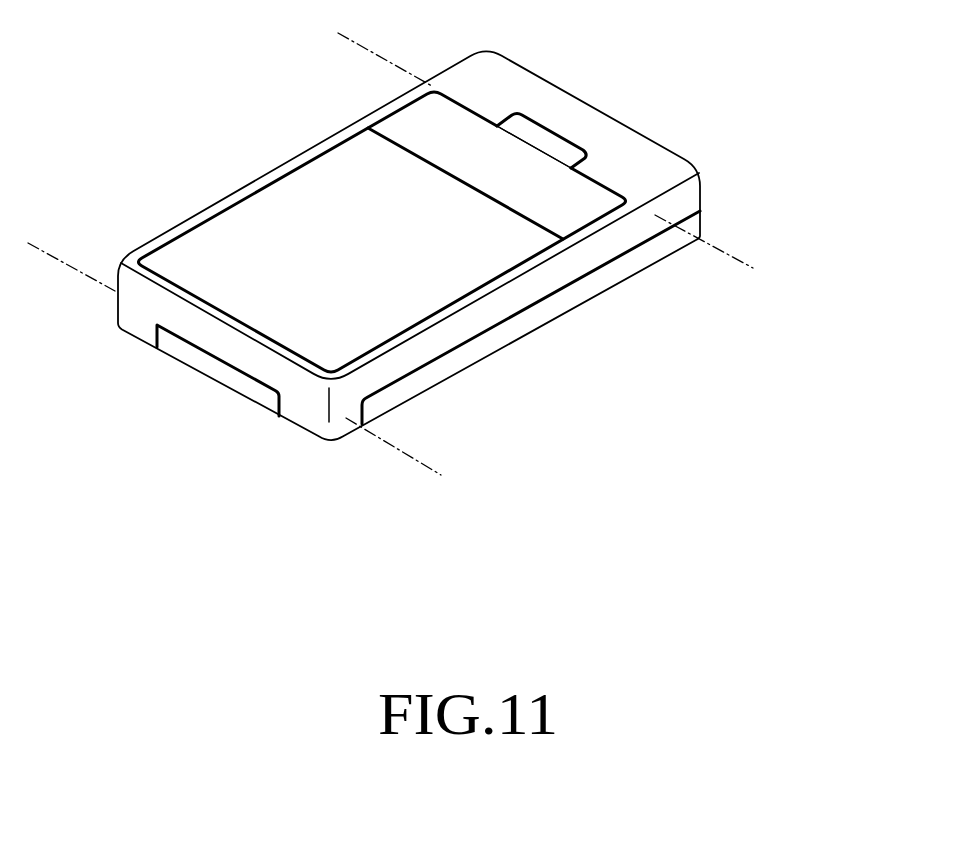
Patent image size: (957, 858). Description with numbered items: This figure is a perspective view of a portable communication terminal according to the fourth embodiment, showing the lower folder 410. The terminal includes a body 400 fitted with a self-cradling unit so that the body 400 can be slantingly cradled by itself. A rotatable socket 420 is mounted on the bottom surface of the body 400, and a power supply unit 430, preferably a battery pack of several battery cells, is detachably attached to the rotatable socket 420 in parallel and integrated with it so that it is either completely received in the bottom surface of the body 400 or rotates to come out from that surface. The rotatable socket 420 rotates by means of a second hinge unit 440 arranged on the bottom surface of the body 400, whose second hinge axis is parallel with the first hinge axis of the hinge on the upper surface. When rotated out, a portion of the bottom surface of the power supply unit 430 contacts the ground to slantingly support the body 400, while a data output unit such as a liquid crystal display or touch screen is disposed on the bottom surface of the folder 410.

The body 400 is at (406, 262).
The folder 410 is at (525, 318).
The rotatable socket 420 is at (415, 113).
The power supply unit 430 is at (293, 212).
The second hinge unit 440 is at (542, 140).